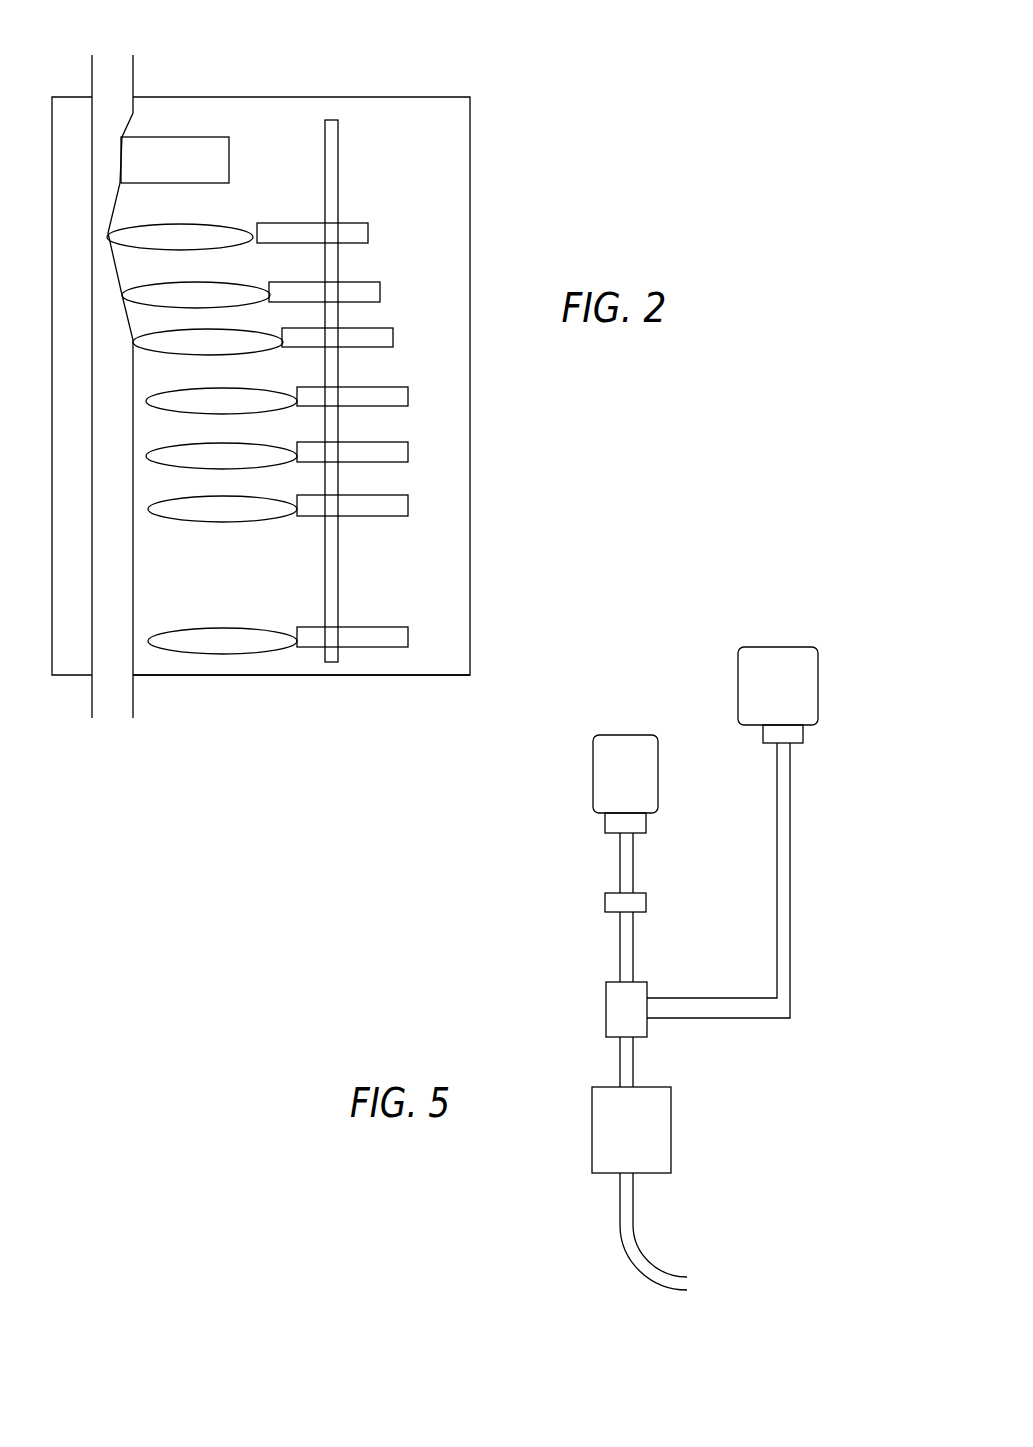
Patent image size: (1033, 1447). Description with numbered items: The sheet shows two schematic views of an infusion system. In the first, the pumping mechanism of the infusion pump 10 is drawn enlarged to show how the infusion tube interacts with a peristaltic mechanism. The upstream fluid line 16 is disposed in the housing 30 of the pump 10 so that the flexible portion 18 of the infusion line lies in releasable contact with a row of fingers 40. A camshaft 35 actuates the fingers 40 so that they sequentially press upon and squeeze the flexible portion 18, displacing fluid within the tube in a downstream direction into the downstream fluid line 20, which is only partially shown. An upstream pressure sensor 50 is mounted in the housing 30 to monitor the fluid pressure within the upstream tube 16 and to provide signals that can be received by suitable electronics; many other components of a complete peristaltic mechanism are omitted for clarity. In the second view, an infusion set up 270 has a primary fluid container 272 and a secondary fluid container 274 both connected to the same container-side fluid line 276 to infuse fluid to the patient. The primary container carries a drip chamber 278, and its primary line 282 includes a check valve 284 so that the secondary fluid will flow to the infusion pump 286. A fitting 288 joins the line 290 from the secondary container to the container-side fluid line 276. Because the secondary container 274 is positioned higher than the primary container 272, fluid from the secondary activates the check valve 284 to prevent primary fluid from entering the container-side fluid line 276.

In FIG. 2, the infusion pump 10 is at (430, 70).
In FIG. 2, the upstream fluid line 16 is at (133, 77).
In FIG. 2, the flexible portion of the tube 18 is at (150, 565).
In FIG. 2, the downstream fluid line 20 is at (150, 708).
In FIG. 2, the housing 30 is at (395, 675).
In FIG. 2, the camshaft 35 is at (338, 183).
In FIG. 2, the fingers 40 is at (180, 222).
In FIG. 2, the upstream pressure sensor 50 is at (229, 160).
In FIG. 5, the infusion set up 270 is at (452, 868).
In FIG. 5, the primary fluid container 272 is at (623, 735).
In FIG. 5, the secondary fluid container 274 is at (818, 685).
In FIG. 5, the container-side fluid line 276 is at (620, 1063).
In FIG. 5, the drip chamber 278 is at (605, 824).
In FIG. 5, the primary line 282 is at (620, 862).
In FIG. 5, the check valve 284 is at (605, 900).
In FIG. 5, the infusion pump 286 is at (592, 1130).
In FIG. 5, the fitting 288 is at (606, 998).
In FIG. 5, the line from the secondary 290 is at (792, 880).